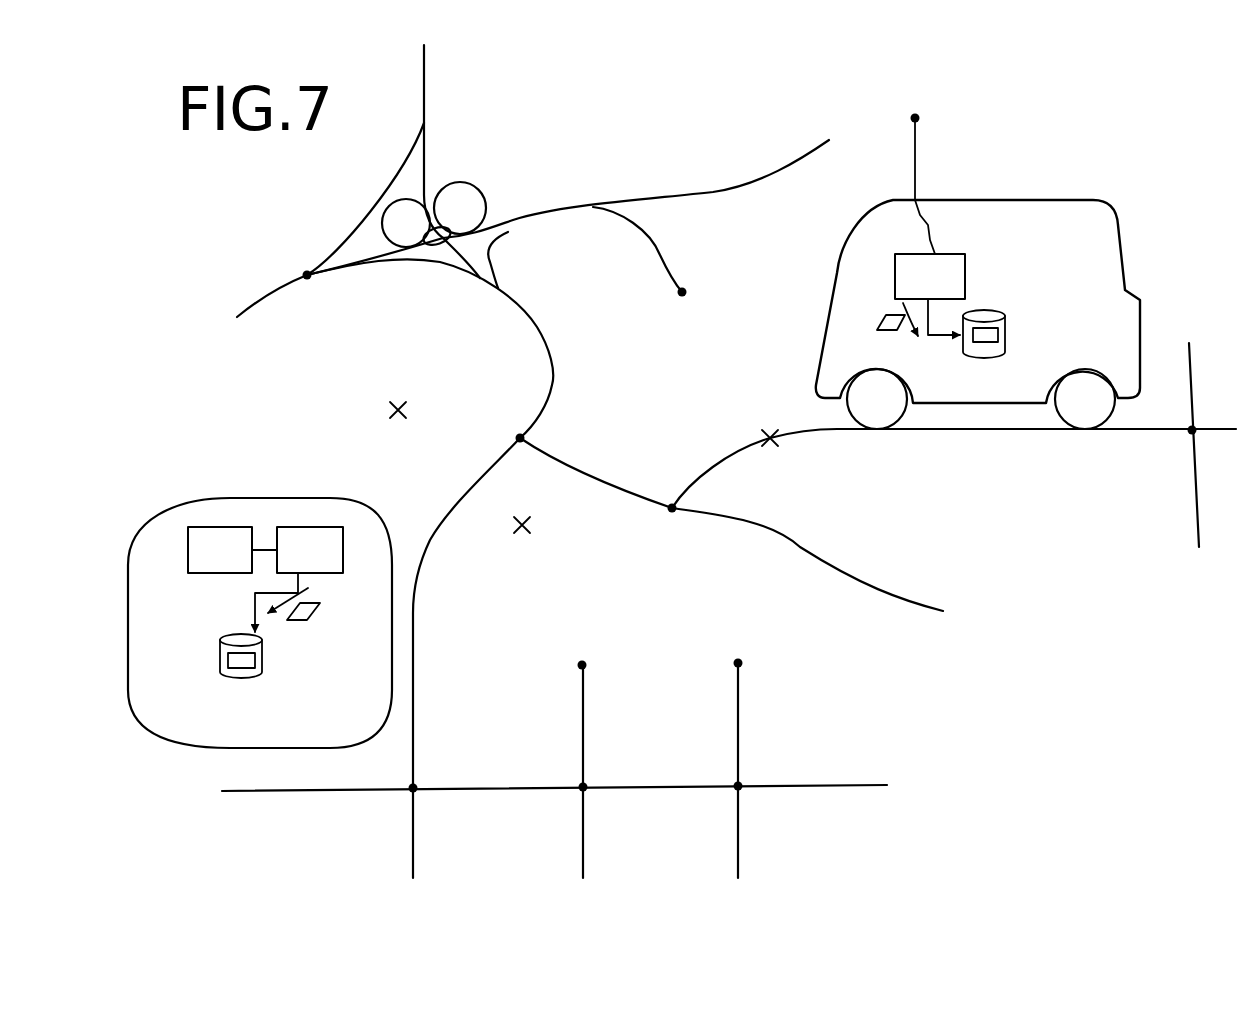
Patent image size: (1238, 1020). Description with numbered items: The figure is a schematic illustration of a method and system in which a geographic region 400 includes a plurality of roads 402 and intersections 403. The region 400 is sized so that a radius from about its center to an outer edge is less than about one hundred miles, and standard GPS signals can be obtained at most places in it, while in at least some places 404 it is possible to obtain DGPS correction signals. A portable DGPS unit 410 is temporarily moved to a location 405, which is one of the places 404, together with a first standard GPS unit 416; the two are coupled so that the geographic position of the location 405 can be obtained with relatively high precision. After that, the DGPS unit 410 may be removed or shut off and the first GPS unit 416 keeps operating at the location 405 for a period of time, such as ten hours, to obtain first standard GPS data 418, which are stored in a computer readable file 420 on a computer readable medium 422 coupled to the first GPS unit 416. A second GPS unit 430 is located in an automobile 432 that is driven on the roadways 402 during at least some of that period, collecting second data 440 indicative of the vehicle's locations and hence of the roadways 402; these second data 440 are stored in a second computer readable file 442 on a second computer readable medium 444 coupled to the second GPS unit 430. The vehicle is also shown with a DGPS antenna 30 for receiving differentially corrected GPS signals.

The DGPS antenna 30 is at (988, 273).
The geographic region 400 is at (305, 226).
The roads 402 is at (424, 82).
The intersections 403 is at (307, 278).
The places 404 is at (405, 412).
The location 405 is at (260, 586).
The DGPS unit 410 is at (241, 565).
The first standard GPS unit 416 is at (331, 565).
The first standard GPS data 418 is at (313, 612).
The computer readable file 420 is at (246, 669).
The computer readable medium 422 is at (220, 660).
The second GPS unit 430 is at (953, 291).
The automobile 432 is at (1083, 199).
The second data 440 is at (880, 313).
The second computer readable file 442 is at (1033, 334).
The second computer readable medium 444 is at (1005, 340).